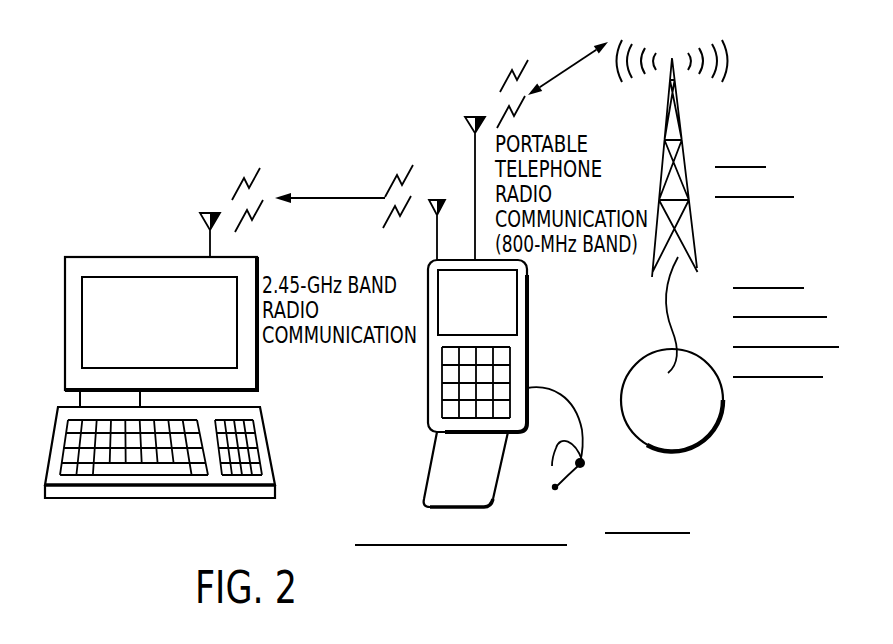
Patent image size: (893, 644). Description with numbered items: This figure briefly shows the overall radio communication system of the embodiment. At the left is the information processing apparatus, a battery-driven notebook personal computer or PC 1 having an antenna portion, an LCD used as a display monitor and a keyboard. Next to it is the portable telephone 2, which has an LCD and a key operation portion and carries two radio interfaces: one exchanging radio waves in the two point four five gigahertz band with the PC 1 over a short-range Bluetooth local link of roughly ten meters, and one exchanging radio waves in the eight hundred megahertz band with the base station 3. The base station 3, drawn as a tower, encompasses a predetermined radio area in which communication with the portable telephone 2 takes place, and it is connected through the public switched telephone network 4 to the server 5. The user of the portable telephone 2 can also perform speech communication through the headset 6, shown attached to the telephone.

The information processing apparatus 1 is at (277, 466).
The portable telephone 2 is at (527, 292).
The base station 3 is at (681, 141).
The public switched telephone network 4 is at (673, 311).
The server 5 is at (723, 411).
The headset 6 is at (575, 470).